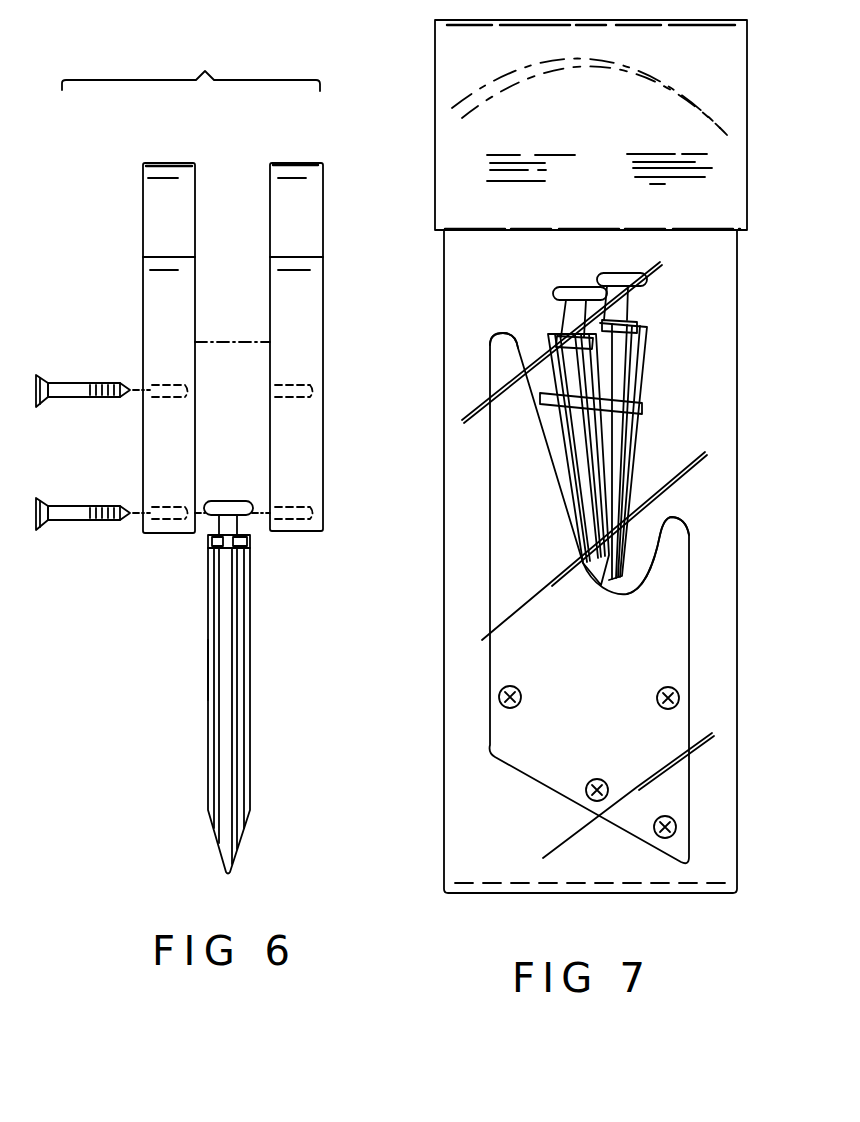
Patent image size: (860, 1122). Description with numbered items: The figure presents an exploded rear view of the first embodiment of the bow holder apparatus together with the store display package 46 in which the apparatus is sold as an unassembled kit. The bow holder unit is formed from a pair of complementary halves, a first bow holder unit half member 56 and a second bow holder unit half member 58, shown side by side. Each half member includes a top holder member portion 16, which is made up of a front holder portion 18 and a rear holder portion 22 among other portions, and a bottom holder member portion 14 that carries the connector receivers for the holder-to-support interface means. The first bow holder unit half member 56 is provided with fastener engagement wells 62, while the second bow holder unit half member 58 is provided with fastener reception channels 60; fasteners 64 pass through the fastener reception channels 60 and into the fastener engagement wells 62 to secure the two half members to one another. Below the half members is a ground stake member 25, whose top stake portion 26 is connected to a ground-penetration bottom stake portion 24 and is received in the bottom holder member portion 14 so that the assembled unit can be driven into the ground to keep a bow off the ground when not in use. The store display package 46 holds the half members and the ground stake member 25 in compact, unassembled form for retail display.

In FIG. 6, the bottom holder member portion 14 is at (158, 456).
In FIG. 7, the bottom holder member portion 14 is at (672, 805).
In FIG. 6, the top holder member portion 16 is at (191, 60).
In FIG. 6, the front holder portion 18 is at (156, 190).
In FIG. 7, the front holder portion 18 is at (500, 430).
In FIG. 7, the rear holder portion 22 is at (688, 526).
In FIG. 6, the ground-penetration bottom stake portion 24 is at (216, 775).
In FIG. 7, the ground-penetration bottom stake portion 24 is at (625, 385).
In FIG. 6, the ground stake member 25 is at (208, 660).
In FIG. 6, the top stake portion 26 is at (217, 516).
In FIG. 7, the top stake portion 26 is at (642, 285).
In FIG. 7, the store display package 46 is at (520, 165).
In FIG. 6, the first bow holder unit half member 56 is at (308, 286).
In FIG. 6, the second bow holder unit half member 58 is at (152, 284).
In FIG. 6, the fastener reception channel 60 is at (168, 397).
In FIG. 6, the fastener engagement well 62 is at (284, 386).
In FIG. 6, the fastener 64 is at (78, 383).